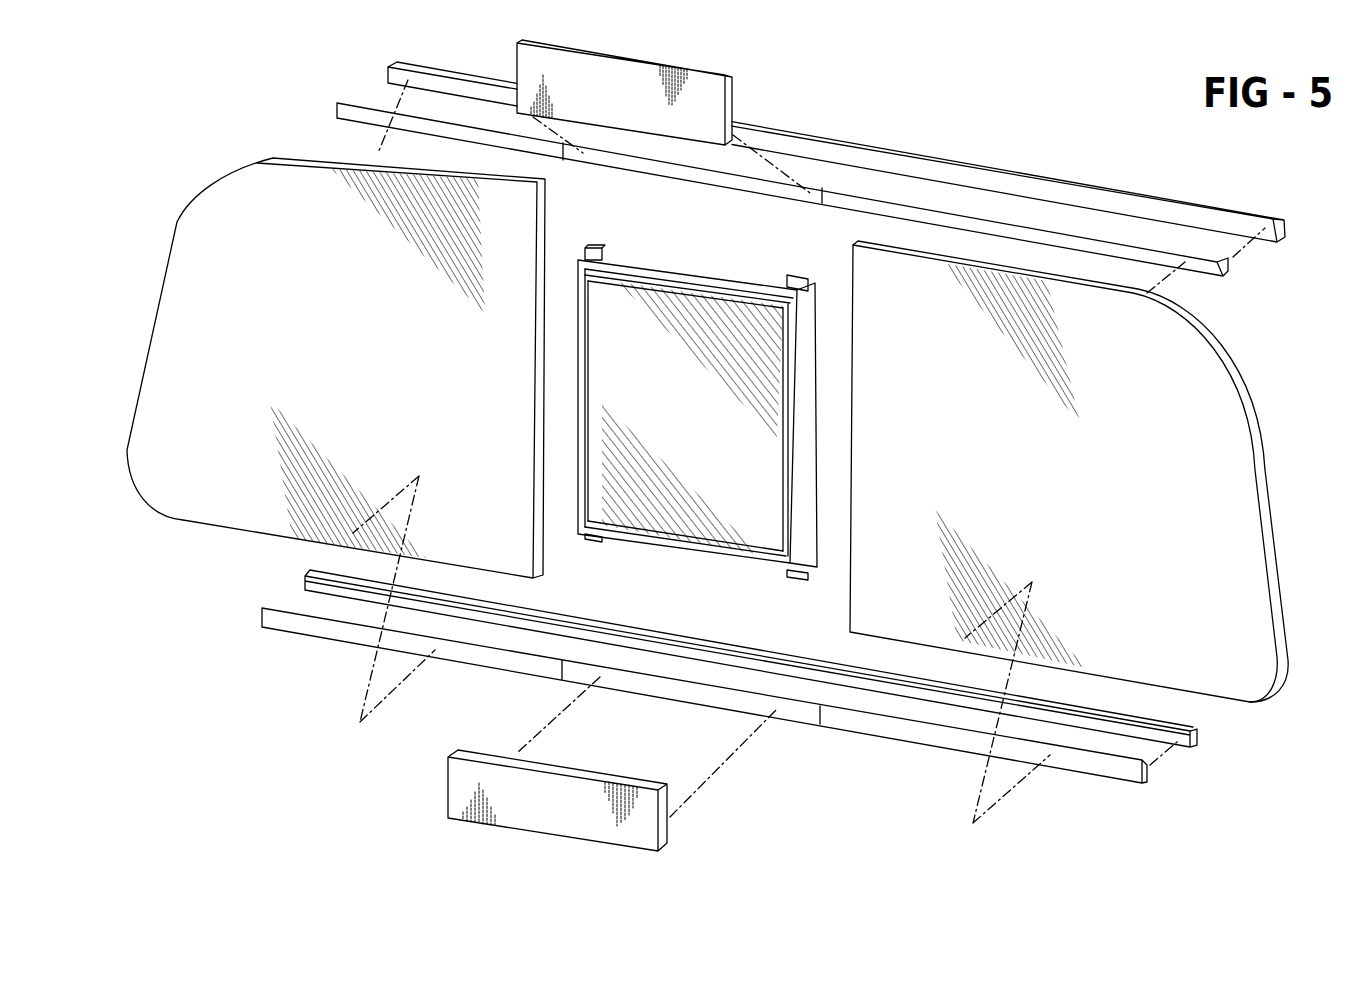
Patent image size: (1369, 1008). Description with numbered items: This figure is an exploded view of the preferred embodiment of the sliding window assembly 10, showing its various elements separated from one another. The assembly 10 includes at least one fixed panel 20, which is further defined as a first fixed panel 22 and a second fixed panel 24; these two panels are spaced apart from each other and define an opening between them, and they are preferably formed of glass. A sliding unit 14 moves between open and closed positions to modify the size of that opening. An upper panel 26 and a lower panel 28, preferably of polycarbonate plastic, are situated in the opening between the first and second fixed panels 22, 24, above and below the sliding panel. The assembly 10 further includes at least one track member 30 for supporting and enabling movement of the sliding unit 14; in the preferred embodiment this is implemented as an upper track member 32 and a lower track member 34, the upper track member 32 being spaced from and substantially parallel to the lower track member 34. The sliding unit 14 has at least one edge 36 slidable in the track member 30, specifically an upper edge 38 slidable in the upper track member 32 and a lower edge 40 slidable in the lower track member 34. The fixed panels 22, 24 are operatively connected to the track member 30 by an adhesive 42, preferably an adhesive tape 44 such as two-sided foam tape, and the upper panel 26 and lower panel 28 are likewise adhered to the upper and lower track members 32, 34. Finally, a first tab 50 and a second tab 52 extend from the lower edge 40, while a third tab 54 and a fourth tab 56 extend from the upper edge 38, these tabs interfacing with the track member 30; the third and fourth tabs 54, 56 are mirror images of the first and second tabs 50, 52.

The assembly 10 is at (995, 133).
The sliding unit 14 is at (701, 253).
The fixed panel 20 is at (176, 222).
The first fixed panel 22 is at (358, 386).
The second fixed panel 24 is at (1060, 503).
The upper panel 26 is at (688, 62).
The lower panel 28 is at (540, 812).
The track member 30 is at (1274, 198).
The upper track member 32 is at (1177, 203).
The lower track member 34 is at (1108, 737).
The edge 36 is at (649, 248).
The upper edge 38 is at (748, 278).
The lower edge 40 is at (708, 557).
The adhesive 42 is at (1231, 290).
The adhesive tape 44 is at (343, 108).
The first tab 50 is at (793, 578).
The second tab 52 is at (588, 542).
The third tab 54 is at (788, 278).
The fourth tab 56 is at (588, 250).